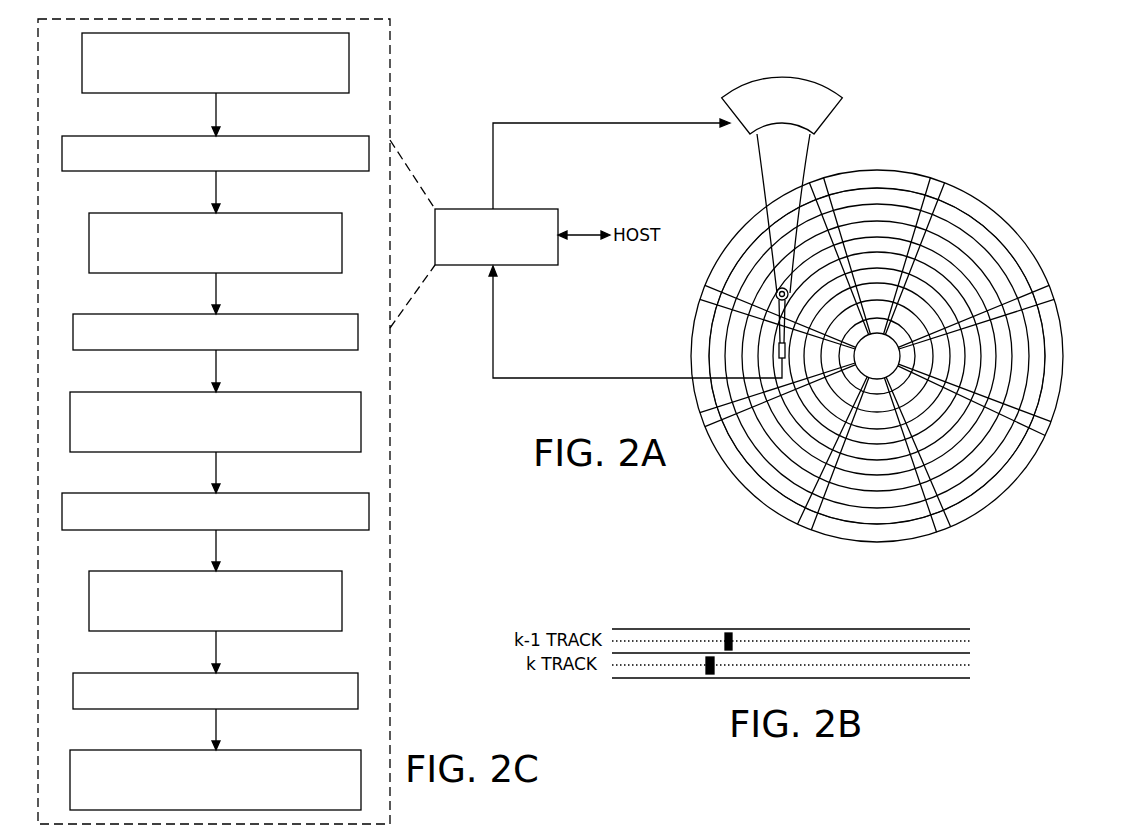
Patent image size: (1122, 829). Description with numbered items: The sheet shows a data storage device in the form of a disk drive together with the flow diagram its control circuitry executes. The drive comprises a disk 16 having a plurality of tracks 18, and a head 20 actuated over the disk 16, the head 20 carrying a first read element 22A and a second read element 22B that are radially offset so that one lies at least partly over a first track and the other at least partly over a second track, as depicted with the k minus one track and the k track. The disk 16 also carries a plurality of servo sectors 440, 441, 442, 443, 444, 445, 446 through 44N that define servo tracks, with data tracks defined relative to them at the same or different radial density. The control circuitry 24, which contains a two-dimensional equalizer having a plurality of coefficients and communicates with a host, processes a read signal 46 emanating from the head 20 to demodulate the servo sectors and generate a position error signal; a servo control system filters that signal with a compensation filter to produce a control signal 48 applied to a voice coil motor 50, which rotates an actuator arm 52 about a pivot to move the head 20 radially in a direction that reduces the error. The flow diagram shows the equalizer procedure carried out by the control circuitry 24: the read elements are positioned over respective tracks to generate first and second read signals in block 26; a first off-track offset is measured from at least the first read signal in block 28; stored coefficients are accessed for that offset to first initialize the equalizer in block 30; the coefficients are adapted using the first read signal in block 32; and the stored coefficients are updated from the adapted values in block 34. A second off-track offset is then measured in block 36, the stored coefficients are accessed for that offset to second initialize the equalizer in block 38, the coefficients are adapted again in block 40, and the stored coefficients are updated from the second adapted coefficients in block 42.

In FIG. 2A, the disk 16 is at (1009, 211).
In FIG. 2A, the tracks 18 is at (878, 195).
In FIG. 2A, the head 20 is at (771, 348).
In FIG. 2B, the first read element 22A is at (724, 636).
In FIG. 2B, the second read element 22B is at (706, 672).
In FIG. 2A, the control circuitry 24 is at (529, 209).
In FIG. 2C, the block 26 is at (313, 93).
In FIG. 2C, the block 28 is at (325, 171).
In FIG. 2C, the block 30 is at (311, 273).
In FIG. 2C, the block 32 is at (318, 350).
In FIG. 2C, the block 34 is at (322, 452).
In FIG. 2C, the block 36 is at (325, 530).
In FIG. 2C, the block 38 is at (310, 631).
In FIG. 2C, the block 40 is at (320, 709).
In FIG. 2C, the block 42 is at (95, 750).
In FIG. 2A, the servo sector 440 is at (950, 190).
In FIG. 2A, the servo sector 441 is at (1045, 291).
In FIG. 2A, the servo sector 442 is at (1046, 429).
In FIG. 2A, the servo sector 443 is at (942, 528).
In FIG. 2A, the servo sector 444 is at (806, 527).
In FIG. 2A, the servo sector 445 is at (710, 428).
In FIG. 2A, the servo sector 446 is at (714, 280).
In FIG. 2A, the servo sector 44N is at (814, 190).
In FIG. 2A, the read signal 46 is at (583, 378).
In FIG. 2A, the control signal 48 is at (493, 168).
In FIG. 2A, the voice coil motor 50 is at (735, 137).
In FIG. 2A, the actuator arm 52 is at (768, 196).